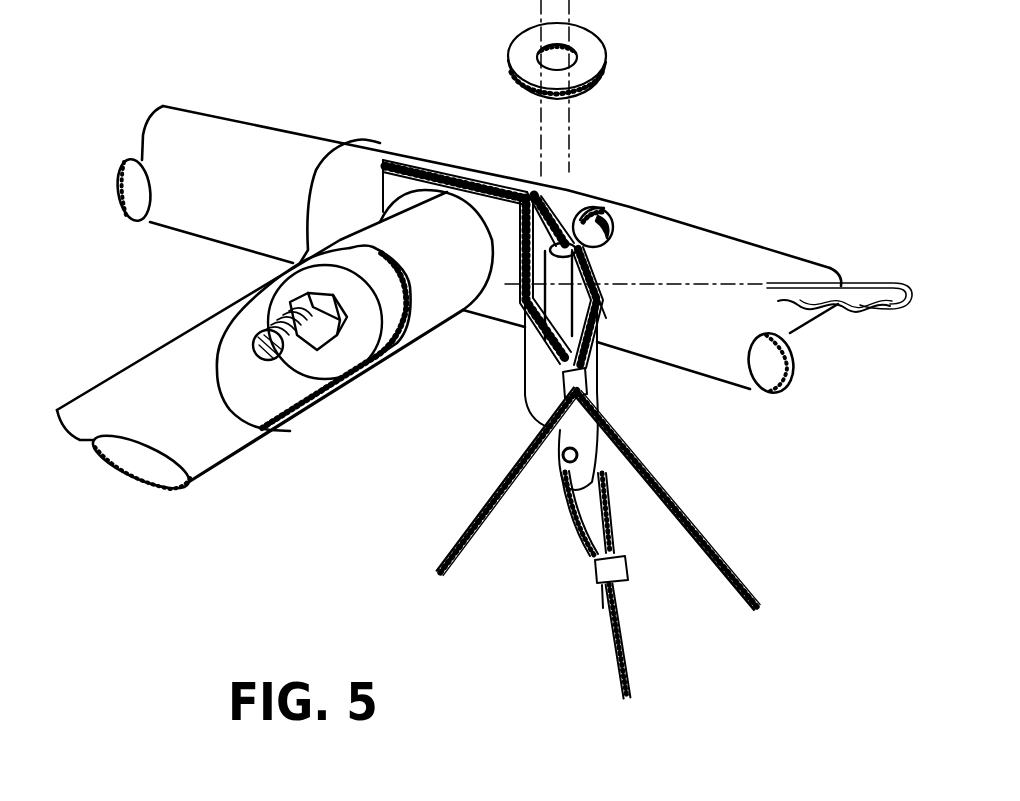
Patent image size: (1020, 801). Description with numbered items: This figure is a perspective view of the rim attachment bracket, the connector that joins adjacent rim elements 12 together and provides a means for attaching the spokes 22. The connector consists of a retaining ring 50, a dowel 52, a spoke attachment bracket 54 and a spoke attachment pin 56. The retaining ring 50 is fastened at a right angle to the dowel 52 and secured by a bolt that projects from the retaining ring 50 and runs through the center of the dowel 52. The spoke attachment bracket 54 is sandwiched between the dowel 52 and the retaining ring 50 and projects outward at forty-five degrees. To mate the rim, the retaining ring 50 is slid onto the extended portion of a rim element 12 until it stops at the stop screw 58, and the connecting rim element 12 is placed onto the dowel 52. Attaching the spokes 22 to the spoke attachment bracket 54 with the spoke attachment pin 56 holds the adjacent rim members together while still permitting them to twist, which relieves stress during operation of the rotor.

The rim element 12 is at (230, 220).
The spoke 22 is at (680, 503).
The retaining ring 50 is at (353, 173).
The dowel 52 is at (374, 297).
The spoke attachment bracket 54 is at (543, 403).
The spoke attachment pin 56 is at (560, 443).
The stop screw 58 is at (615, 220).